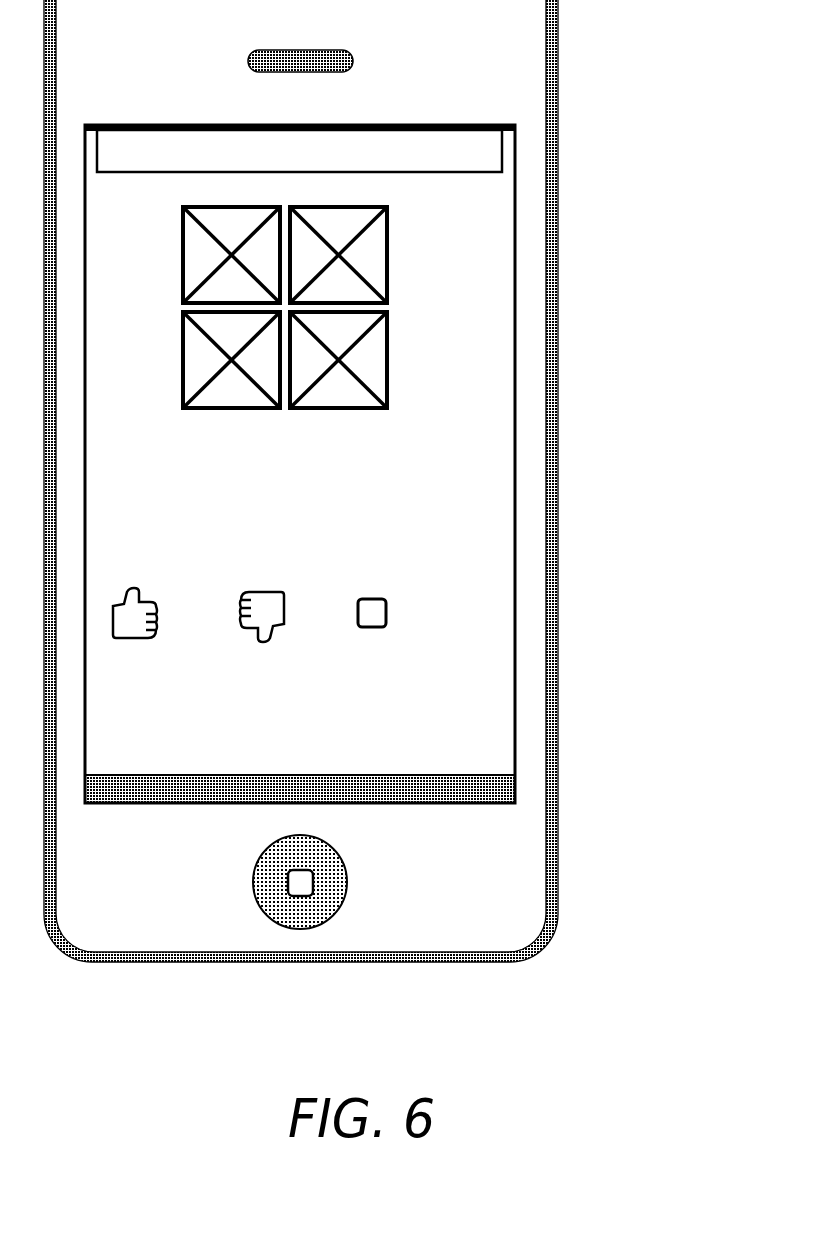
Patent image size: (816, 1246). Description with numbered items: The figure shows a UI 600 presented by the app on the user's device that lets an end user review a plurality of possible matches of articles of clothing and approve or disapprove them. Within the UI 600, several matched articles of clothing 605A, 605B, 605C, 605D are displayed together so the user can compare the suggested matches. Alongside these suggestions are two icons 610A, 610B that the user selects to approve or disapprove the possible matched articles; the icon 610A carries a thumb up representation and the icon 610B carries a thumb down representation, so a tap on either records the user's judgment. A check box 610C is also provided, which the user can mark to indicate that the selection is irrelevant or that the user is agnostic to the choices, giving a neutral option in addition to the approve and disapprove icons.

The UI 600 is at (327, 718).
The matched article of clothing 605A is at (255, 276).
The matched article of clothing 605B is at (255, 385).
The matched article of clothing 605C is at (365, 240).
The matched article of clothing 605D is at (365, 358).
The icon 610A is at (145, 600).
The icon 610B is at (273, 607).
The check box 610C is at (403, 600).